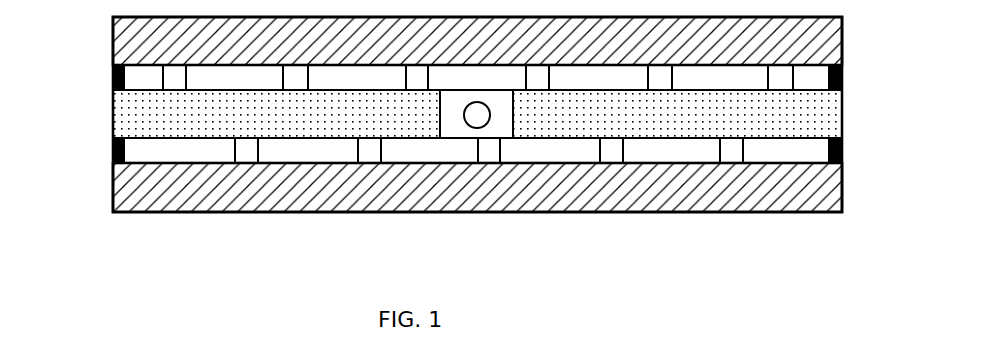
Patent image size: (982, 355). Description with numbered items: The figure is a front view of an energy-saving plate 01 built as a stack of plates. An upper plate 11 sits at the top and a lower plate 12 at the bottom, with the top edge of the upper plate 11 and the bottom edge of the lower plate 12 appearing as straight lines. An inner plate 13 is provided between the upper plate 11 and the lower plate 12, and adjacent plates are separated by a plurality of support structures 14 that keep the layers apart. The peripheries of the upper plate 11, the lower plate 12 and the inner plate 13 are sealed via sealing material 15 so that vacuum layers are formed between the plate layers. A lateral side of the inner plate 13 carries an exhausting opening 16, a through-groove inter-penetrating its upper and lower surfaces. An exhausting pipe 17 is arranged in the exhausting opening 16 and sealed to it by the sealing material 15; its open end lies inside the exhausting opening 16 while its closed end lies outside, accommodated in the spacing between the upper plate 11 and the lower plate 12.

The energy-saving plate 01 is at (842, 279).
The upper plate 11 is at (132, 30).
The lower plate 12 is at (137, 187).
The inner plate 13 is at (127, 108).
The support structures 14 is at (178, 83).
The sealing material 15 is at (112, 80).
The exhausting opening 16 is at (453, 115).
The exhausting pipe 17 is at (477, 115).